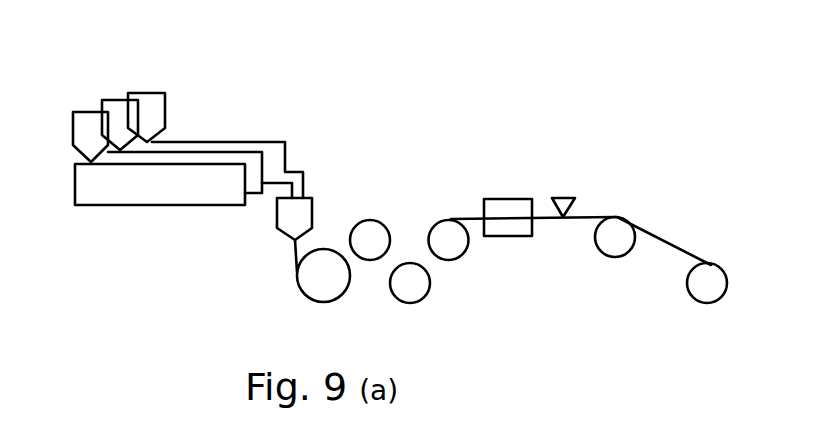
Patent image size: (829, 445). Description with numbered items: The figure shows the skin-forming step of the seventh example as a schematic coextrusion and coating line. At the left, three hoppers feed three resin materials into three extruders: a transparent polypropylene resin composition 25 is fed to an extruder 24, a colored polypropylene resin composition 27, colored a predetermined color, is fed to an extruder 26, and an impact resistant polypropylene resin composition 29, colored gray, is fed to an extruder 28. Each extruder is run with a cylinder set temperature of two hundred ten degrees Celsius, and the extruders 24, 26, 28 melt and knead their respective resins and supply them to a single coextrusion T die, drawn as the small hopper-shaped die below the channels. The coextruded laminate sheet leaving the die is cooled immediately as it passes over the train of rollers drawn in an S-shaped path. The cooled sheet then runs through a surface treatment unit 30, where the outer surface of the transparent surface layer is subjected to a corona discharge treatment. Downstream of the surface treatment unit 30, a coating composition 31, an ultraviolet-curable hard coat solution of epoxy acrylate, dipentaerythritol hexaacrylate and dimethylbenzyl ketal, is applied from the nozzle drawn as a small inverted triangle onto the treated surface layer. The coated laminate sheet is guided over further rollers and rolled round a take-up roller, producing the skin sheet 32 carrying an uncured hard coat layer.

The extruder 24 is at (267, 141).
The transparent polypropylene resin composition 25 is at (155, 93).
The extruder 26 is at (200, 151).
The colored polypropylene resin composition 27 is at (115, 101).
The extruder 28 is at (170, 192).
The impact resistant polypropylene resin composition 29 is at (83, 110).
The surface treatment unit 30 is at (508, 217).
The coating composition (hard coat solution) 31 is at (562, 198).
The skin sheet 32 is at (669, 238).